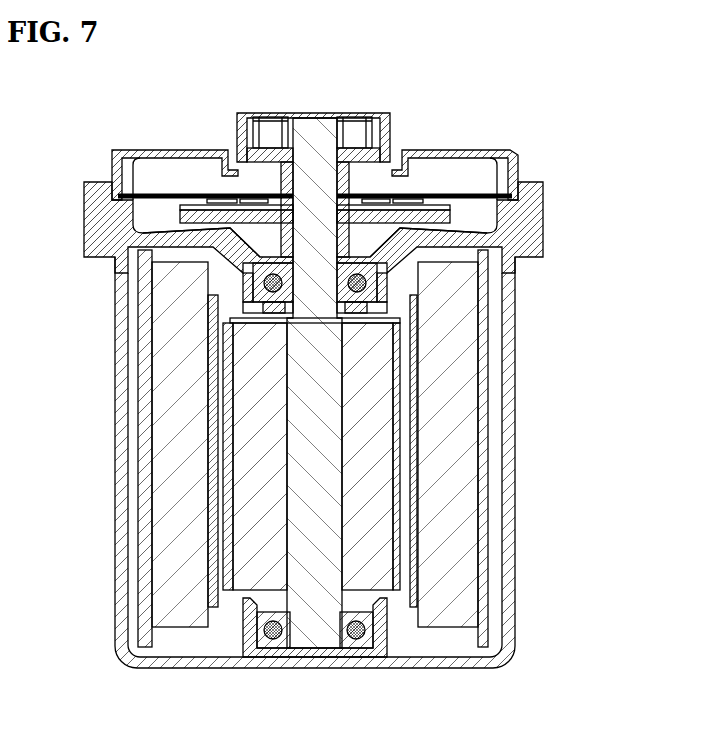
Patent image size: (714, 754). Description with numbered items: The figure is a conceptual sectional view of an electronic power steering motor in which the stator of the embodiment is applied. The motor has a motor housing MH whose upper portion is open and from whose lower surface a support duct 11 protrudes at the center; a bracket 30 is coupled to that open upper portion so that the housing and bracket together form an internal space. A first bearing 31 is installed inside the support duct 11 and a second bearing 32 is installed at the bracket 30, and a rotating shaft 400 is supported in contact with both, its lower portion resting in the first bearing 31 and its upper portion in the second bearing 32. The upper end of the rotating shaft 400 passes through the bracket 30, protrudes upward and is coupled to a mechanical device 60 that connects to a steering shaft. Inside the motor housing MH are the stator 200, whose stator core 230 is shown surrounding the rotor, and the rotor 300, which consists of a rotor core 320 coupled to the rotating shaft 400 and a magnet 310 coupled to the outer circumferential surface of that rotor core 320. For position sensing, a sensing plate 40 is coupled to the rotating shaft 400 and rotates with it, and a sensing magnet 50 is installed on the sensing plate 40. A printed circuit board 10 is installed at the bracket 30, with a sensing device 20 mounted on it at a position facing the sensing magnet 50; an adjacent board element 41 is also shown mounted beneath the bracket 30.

The printed circuit board 10 is at (470, 190).
The support duct 11 is at (383, 627).
The sensing device 20 is at (402, 193).
The bracket 30 is at (543, 208).
The first bearing 31 is at (356, 648).
The second bearing 32 is at (387, 297).
The sensing plate 40 is at (420, 248).
The circuit board 41 is at (448, 212).
The sensing magnet 50 is at (400, 207).
The mechanical device 60 is at (388, 117).
The stator 200 is at (253, 448).
The stator core 230 is at (160, 448).
The rotor 300 is at (447, 454).
The magnet 310 is at (400, 447).
The rotor core 320 is at (380, 500).
The rotating shaft 400 is at (330, 545).
The motor housing MH is at (515, 600).